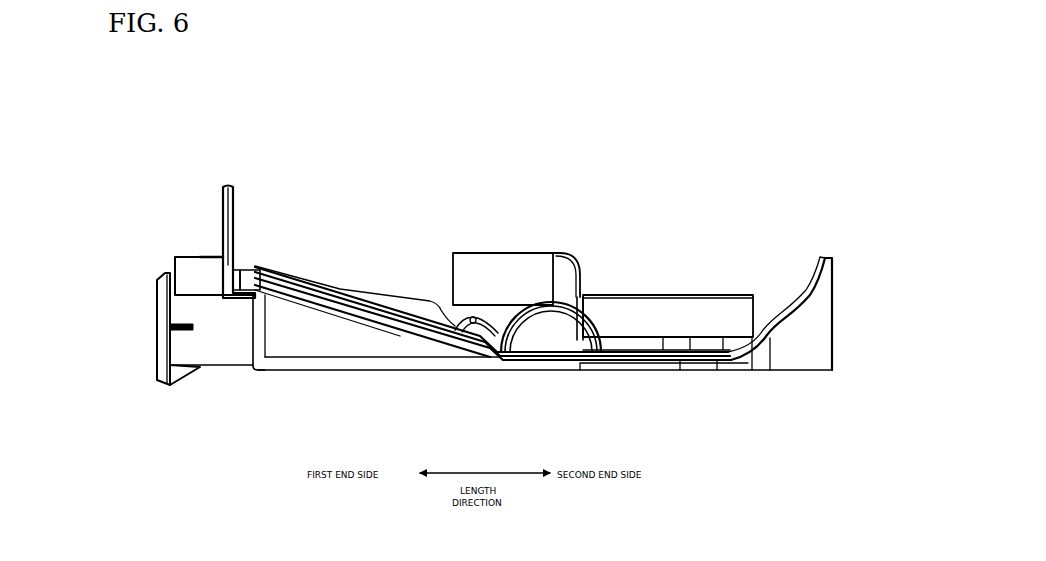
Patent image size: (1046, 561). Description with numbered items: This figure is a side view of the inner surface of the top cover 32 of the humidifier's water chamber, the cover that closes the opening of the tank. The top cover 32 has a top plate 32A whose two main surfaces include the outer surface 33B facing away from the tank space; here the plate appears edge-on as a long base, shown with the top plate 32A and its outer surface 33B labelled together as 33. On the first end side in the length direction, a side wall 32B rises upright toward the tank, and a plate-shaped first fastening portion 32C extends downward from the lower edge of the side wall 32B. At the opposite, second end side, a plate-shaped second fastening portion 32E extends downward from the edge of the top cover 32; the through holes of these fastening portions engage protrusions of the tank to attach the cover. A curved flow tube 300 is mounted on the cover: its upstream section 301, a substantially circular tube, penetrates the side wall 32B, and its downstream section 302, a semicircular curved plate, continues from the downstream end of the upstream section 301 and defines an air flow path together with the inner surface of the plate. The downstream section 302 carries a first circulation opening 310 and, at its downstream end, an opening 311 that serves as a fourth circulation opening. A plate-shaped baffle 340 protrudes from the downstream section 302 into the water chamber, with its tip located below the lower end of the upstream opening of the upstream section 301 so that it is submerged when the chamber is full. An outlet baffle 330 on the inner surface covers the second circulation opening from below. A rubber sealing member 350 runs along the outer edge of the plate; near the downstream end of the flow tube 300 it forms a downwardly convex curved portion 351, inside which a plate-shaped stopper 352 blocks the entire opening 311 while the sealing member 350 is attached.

The top cover 32 is at (325, 190).
The top plate 32A is at (353, 370).
The side wall 32B is at (252, 345).
The first fastening portion 32C is at (223, 200).
The second fastening portion 32E is at (833, 322).
The base body 33 is at (300, 370).
The outer surface 33B is at (545, 393).
The flow tube 300 is at (392, 272).
The upstream section 301 is at (207, 368).
The downstream section 302 is at (420, 360).
The first circulation opening 310 is at (487, 307).
The opening 311 is at (581, 297).
The outlet baffle 330 is at (690, 286).
The baffle 340 is at (510, 253).
The sealing member 350 is at (287, 270).
The curved portion 351 is at (573, 350).
The stopper 352 is at (523, 355).